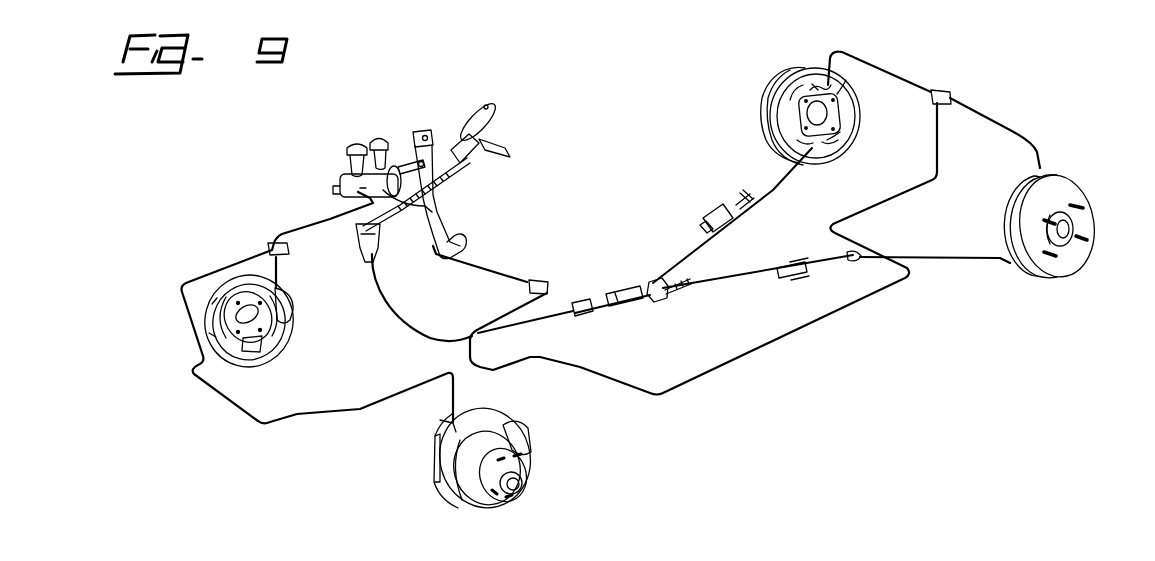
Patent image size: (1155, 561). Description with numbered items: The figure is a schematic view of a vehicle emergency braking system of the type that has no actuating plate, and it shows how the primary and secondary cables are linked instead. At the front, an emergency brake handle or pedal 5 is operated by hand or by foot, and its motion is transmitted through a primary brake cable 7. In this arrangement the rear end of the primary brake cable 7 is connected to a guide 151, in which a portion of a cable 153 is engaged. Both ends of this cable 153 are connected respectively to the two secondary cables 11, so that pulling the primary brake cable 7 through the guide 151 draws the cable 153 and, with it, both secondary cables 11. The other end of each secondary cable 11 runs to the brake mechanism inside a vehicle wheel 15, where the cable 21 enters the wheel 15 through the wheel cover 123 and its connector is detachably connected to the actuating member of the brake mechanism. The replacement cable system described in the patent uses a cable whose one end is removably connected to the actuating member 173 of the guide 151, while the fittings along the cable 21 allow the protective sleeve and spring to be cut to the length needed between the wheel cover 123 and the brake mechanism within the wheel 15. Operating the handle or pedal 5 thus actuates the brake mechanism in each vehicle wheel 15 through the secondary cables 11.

The emergency brake handle or pedal 5 is at (508, 139).
The primary brake cable 7 is at (388, 321).
The secondary cable 11 is at (790, 183).
The vehicle wheel 15 is at (762, 107).
The cable 21 is at (738, 216).
The wheel cover 123 is at (832, 149).
The guide 151 is at (660, 303).
The cable 153 is at (735, 284).
The actuating member 173 is at (627, 290).